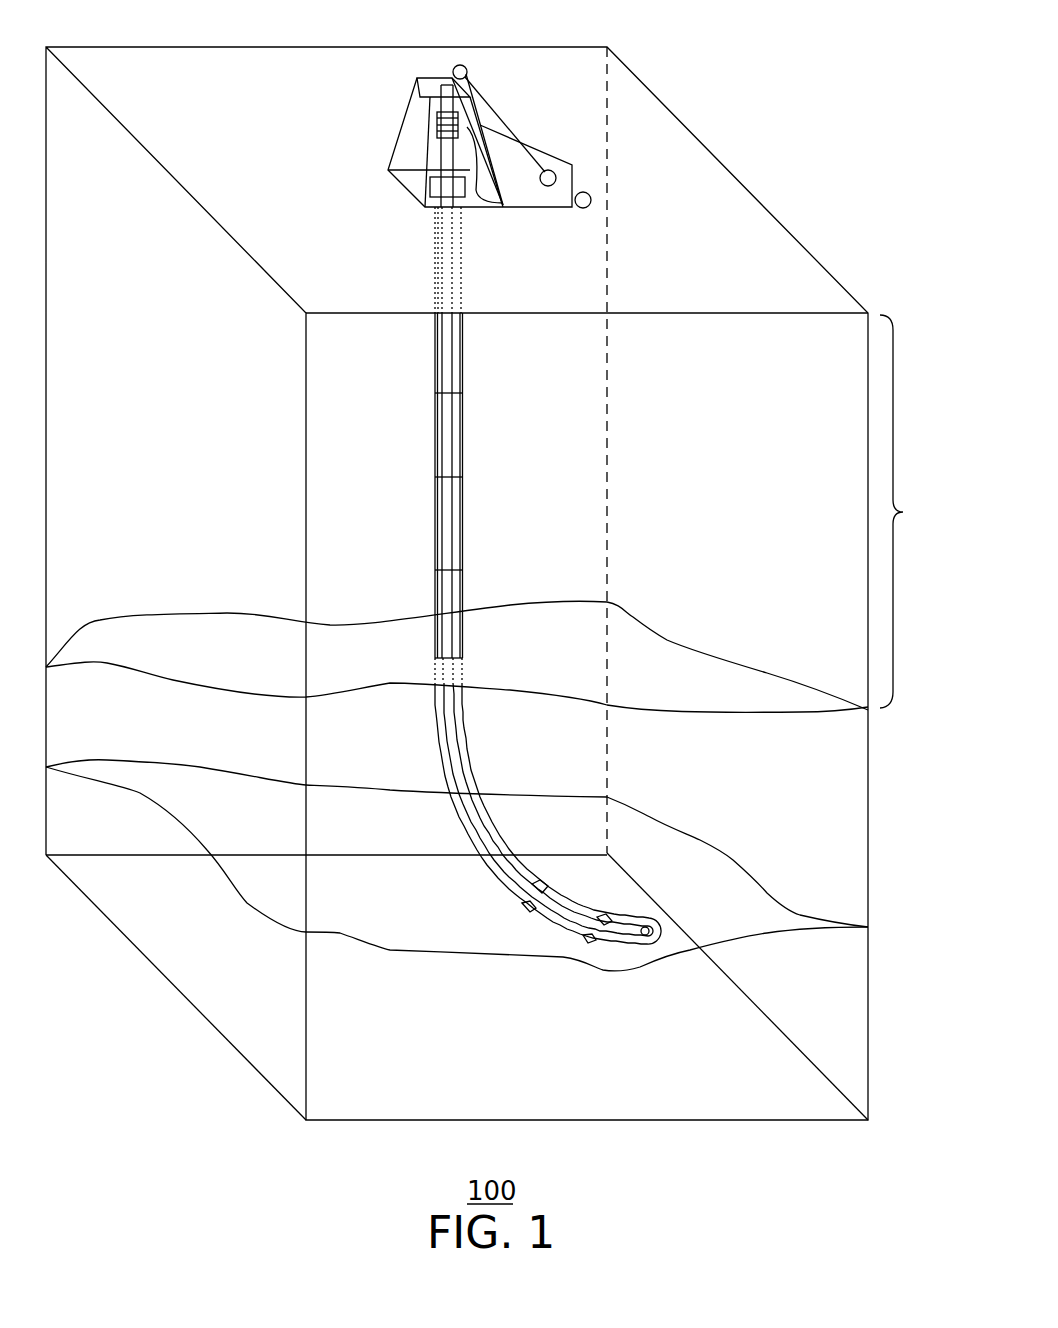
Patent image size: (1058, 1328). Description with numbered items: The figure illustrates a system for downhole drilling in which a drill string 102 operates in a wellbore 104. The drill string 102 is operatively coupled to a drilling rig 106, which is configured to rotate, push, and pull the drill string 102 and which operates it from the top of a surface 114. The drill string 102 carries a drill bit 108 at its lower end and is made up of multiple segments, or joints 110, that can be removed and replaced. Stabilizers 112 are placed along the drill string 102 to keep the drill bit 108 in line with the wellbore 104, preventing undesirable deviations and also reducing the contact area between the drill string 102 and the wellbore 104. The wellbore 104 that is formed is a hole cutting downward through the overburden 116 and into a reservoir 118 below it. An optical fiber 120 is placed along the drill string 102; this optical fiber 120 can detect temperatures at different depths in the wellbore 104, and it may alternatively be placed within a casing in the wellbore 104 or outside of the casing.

The drill string 102 is at (440, 722).
The wellbore 104 is at (462, 820).
The drilling rig 106 is at (433, 88).
The drill bit 108 is at (645, 940).
The joints 110 is at (447, 437).
The stabilizers 112 is at (588, 940).
The surface 114 is at (787, 273).
The overburden 116 is at (502, 513).
The reservoir 118 is at (835, 830).
The optical fiber 120 is at (435, 503).